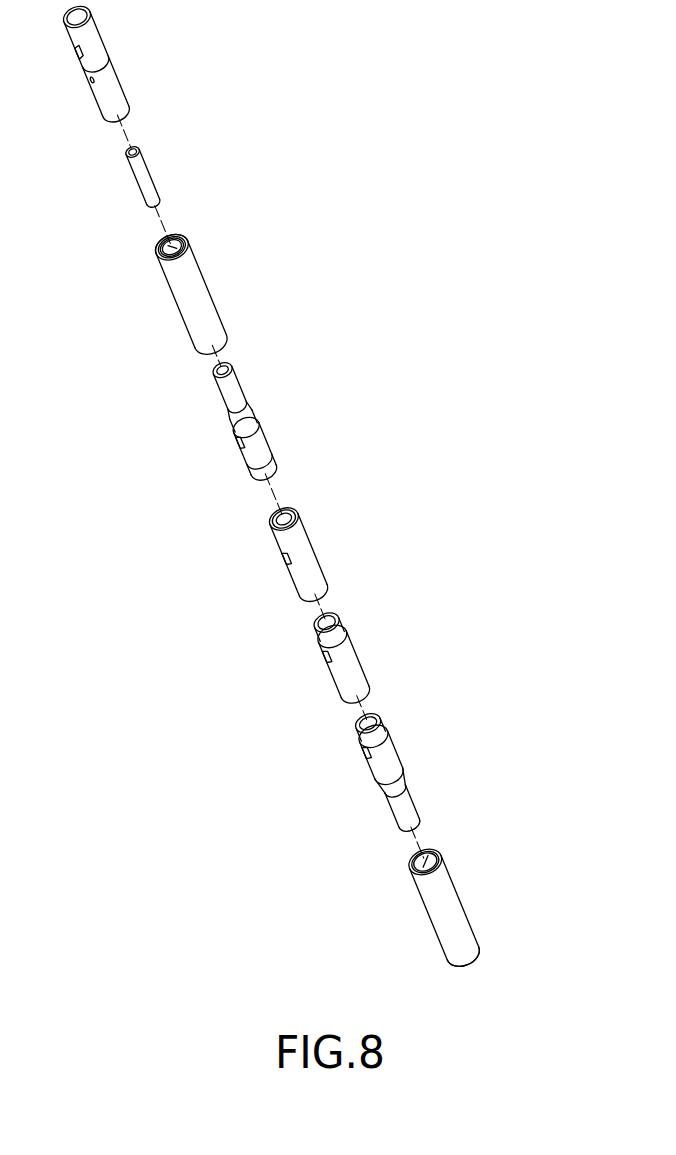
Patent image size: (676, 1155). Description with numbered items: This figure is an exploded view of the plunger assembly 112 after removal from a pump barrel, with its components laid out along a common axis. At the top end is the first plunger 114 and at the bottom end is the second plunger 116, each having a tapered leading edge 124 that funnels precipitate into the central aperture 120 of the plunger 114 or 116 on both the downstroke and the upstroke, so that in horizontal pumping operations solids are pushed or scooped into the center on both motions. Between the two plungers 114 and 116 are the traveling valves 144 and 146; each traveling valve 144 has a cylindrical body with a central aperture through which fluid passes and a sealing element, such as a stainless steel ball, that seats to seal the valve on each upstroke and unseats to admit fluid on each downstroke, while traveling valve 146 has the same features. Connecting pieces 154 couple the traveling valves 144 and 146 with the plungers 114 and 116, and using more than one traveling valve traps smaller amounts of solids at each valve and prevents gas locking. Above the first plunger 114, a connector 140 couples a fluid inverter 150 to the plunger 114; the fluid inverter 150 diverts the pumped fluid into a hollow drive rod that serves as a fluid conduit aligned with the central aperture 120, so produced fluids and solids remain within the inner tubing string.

The plunger assembly 112 is at (468, 352).
The plunger 114 is at (192, 347).
The plunger 116 is at (407, 865).
The central aperture 120 is at (158, 243).
The tapered leading edge 124 is at (183, 230).
The connector 140 is at (148, 174).
The traveling valve 144 is at (316, 552).
The traveling valve 146 is at (323, 673).
The fluid inverter 150 is at (114, 80).
The connecting piece 154 is at (233, 446).